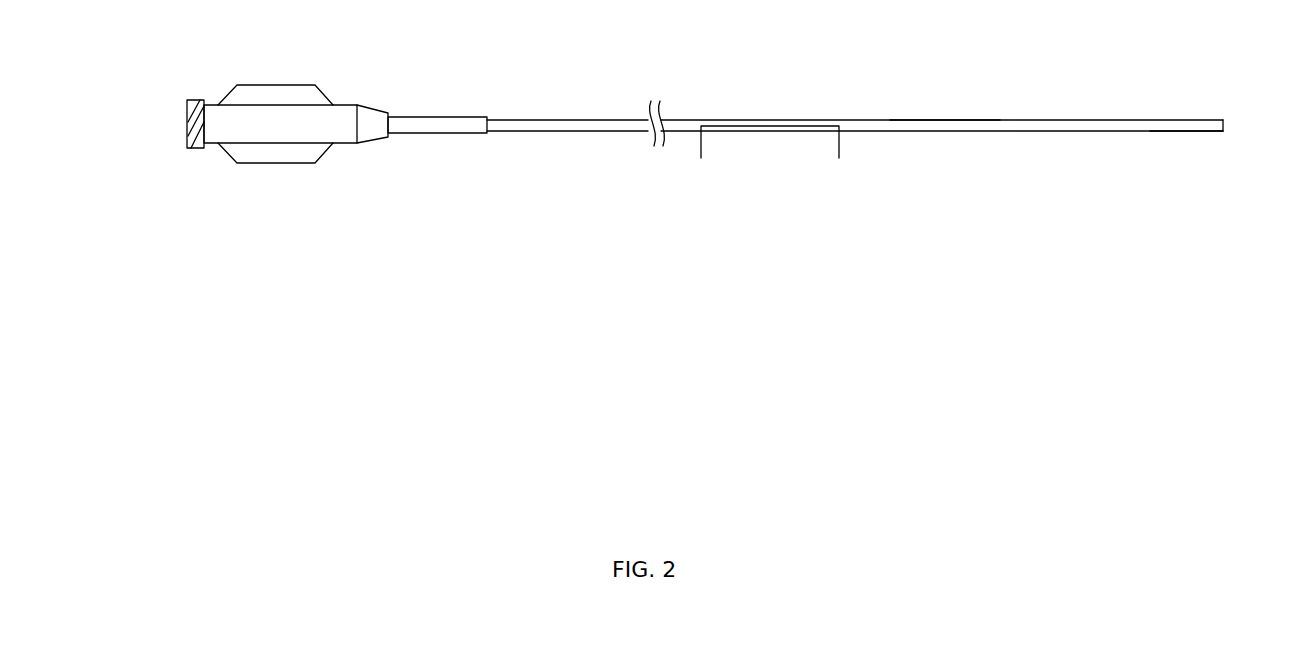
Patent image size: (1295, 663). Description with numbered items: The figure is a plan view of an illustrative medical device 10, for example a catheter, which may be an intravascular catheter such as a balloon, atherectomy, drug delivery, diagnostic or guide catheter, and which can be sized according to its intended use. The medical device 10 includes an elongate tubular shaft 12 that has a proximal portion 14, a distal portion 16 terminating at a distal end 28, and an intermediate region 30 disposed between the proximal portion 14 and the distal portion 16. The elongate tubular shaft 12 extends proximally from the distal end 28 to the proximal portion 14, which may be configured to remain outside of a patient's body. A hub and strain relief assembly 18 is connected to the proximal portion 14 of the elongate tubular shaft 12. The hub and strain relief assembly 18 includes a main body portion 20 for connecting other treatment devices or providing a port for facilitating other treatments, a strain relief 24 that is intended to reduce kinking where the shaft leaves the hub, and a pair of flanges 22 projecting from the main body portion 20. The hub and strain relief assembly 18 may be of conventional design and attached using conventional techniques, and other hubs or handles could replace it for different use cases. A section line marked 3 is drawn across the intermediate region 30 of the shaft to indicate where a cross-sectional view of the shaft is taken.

The medical device 10 is at (404, 78).
The elongate tubular shaft 12 is at (883, 90).
The proximal portion 14 is at (563, 142).
The distal portion 16 is at (1182, 142).
The hub and strain relief assembly 18 is at (215, 172).
The main body portion 20 is at (307, 135).
The flanges 22 is at (275, 93).
The strain relief 24 is at (440, 120).
The distal end 28 is at (1213, 118).
The intermediate region 30 is at (937, 142).
The section line 3- 3 is at (770, 163).